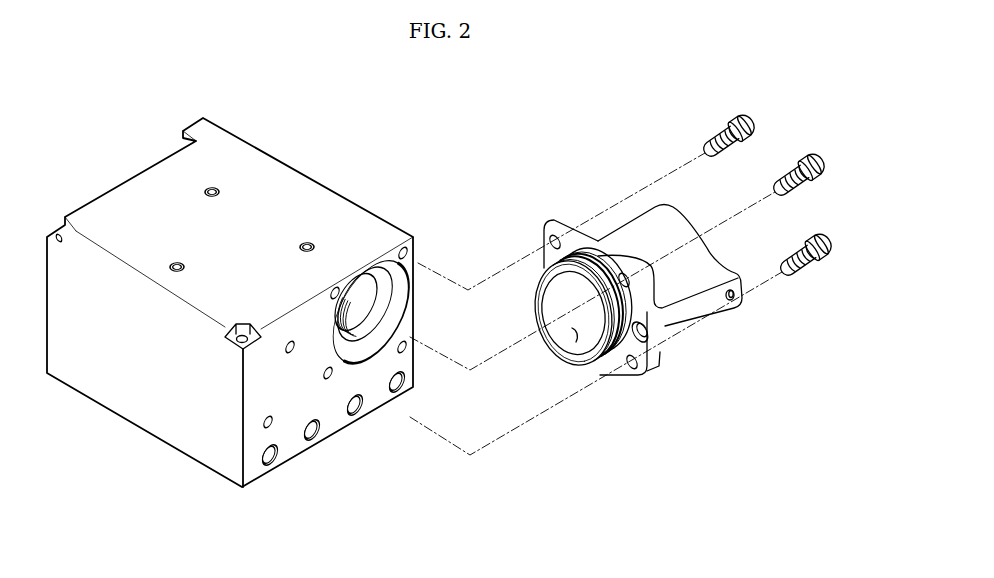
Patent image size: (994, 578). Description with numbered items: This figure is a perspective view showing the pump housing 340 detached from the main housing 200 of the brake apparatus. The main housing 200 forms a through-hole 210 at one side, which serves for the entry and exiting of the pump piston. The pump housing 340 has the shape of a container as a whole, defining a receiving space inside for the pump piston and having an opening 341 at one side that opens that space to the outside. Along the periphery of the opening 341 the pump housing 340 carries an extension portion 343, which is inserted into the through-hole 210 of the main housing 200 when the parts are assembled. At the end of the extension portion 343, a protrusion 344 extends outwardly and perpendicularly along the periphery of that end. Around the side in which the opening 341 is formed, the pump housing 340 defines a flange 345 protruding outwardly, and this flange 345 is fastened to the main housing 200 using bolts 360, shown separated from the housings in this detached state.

The main housing 200 is at (307, 197).
The through-hole 210 is at (394, 283).
The pump housing 340 is at (650, 206).
The opening 341 is at (572, 356).
The extension portion 343 is at (662, 338).
The protrusion 344 is at (601, 370).
The flange 345 is at (567, 217).
The bolts 360 is at (743, 116).